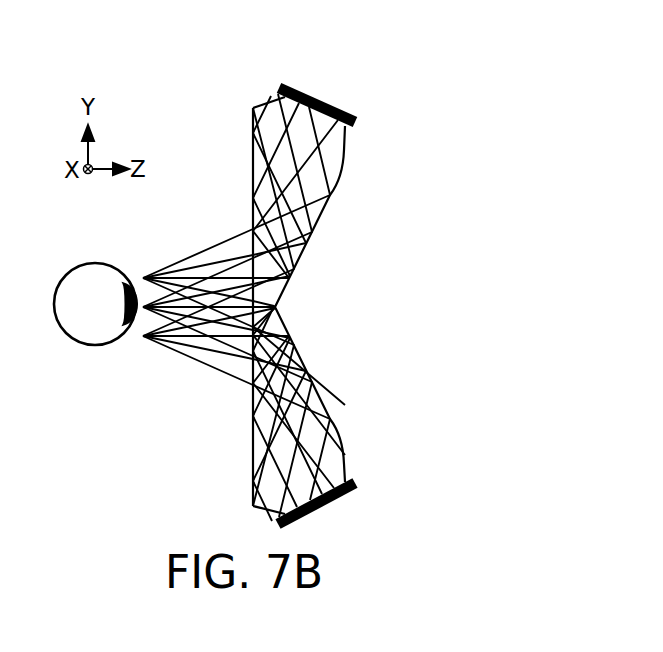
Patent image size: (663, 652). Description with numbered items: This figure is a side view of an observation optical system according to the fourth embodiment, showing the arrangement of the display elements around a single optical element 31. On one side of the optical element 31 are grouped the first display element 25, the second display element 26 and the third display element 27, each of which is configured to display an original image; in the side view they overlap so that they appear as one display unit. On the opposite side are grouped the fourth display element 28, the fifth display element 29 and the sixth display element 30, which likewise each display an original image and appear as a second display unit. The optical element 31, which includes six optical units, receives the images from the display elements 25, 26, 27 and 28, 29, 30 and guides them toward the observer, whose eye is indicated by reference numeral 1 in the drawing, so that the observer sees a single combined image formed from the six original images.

The eye of observer 1 is at (86, 266).
The third display element 27 is at (352, 86).
The second display element 26 is at (317, 105).
The first display element 25 is at (343, 78).
The optical element 31 is at (334, 420).
The sixth display element 30 is at (395, 503).
The fifth display element 29 is at (316, 503).
The fourth display element 28 is at (356, 491).